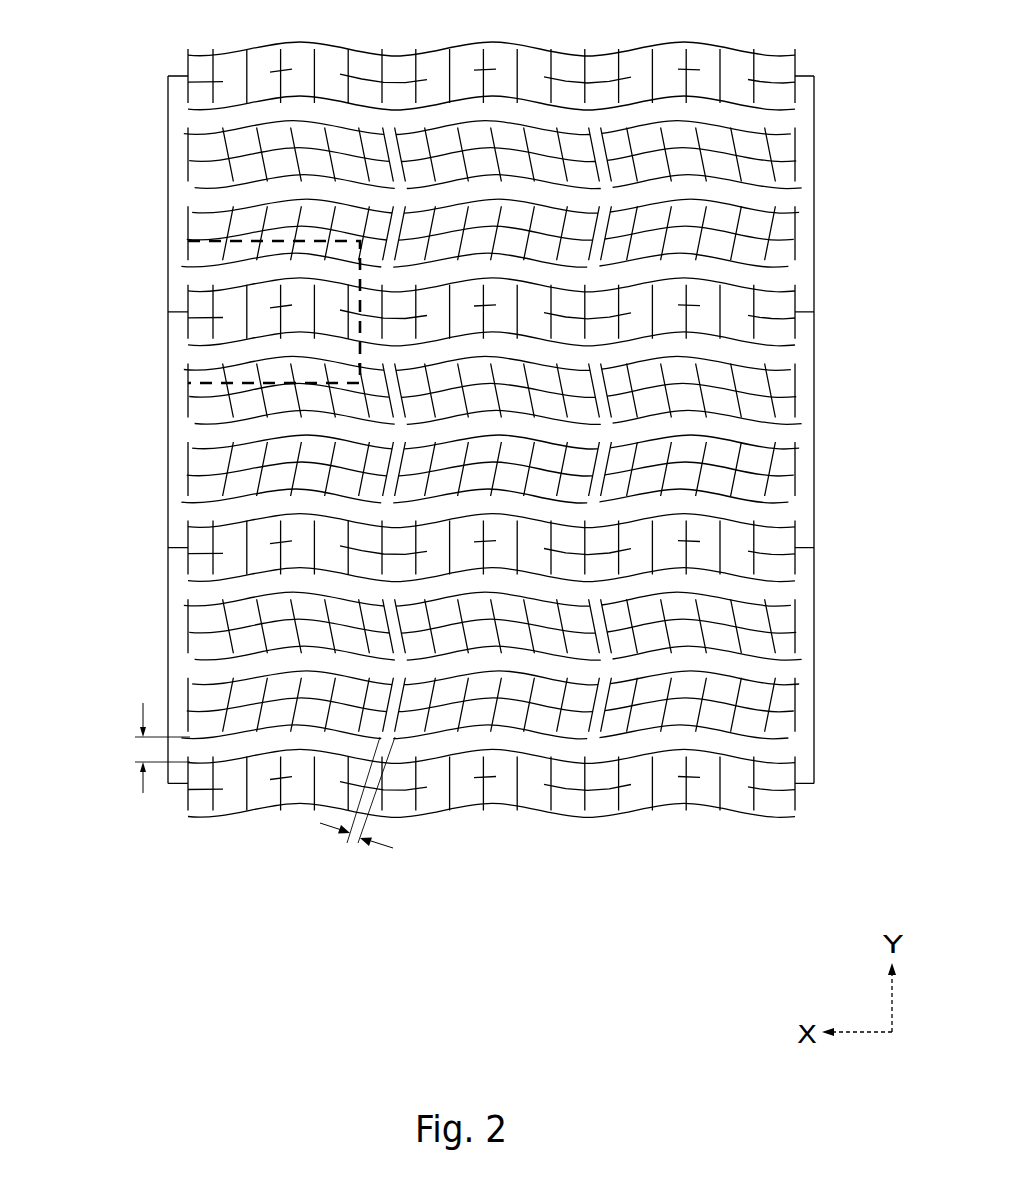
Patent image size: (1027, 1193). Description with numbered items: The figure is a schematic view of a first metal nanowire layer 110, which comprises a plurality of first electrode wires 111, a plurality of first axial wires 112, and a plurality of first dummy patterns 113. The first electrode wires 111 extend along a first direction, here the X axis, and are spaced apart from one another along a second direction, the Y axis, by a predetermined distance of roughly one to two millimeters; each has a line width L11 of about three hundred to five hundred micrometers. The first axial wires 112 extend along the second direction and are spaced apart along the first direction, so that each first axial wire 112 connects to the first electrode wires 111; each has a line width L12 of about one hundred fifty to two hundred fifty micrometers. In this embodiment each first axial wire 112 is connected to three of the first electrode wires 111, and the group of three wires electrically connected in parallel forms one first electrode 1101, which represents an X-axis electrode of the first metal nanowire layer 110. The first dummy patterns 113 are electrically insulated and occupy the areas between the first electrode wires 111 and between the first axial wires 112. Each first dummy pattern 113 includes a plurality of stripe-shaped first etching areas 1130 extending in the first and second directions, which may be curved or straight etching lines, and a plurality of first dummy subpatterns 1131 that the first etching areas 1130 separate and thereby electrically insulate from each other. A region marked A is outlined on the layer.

The first metal nanowire layer 110 is at (485, 415).
The first electrode 1101 is at (452, 376).
The first electrode wire 111 is at (780, 122).
The first axial wire 112 is at (592, 143).
The first dummy pattern 113 is at (413, 163).
The first etching area 1130 is at (443, 164).
The first dummy subpattern 1131 is at (197, 152).
The line width of the first electrode wire L11 is at (139, 748).
The line width of the first axial wire L12 is at (357, 807).
The enlarged region A is at (287, 312).